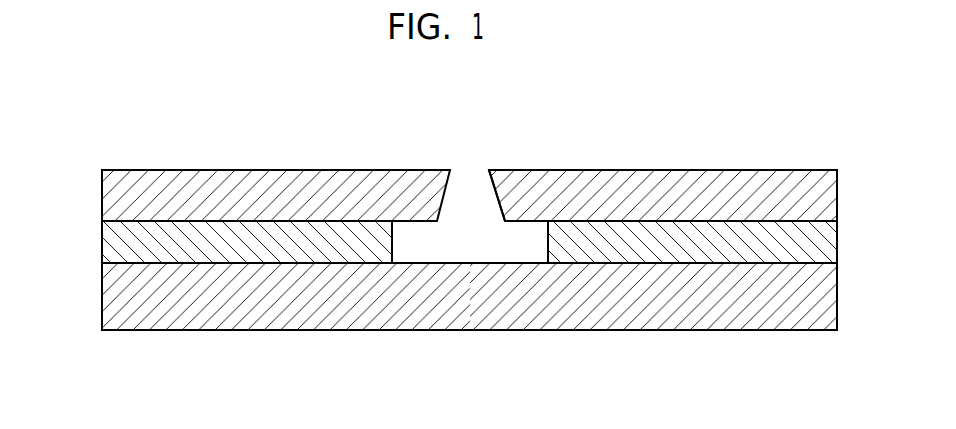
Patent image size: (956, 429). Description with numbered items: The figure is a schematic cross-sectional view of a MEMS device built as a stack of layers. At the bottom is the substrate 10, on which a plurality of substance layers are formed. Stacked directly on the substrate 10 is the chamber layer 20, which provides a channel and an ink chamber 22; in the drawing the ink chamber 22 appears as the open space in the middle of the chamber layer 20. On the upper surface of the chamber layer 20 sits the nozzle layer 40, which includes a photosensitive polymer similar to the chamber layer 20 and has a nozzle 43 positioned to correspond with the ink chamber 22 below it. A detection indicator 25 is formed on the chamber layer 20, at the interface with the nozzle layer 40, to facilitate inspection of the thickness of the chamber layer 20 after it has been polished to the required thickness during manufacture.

The substrate 10 is at (120, 298).
The chamber layer 20 is at (120, 242).
The ink chamber 22 is at (490, 247).
The detection indicator 25 is at (694, 225).
The nozzle layer 40 is at (120, 187).
The nozzle 43 is at (497, 195).